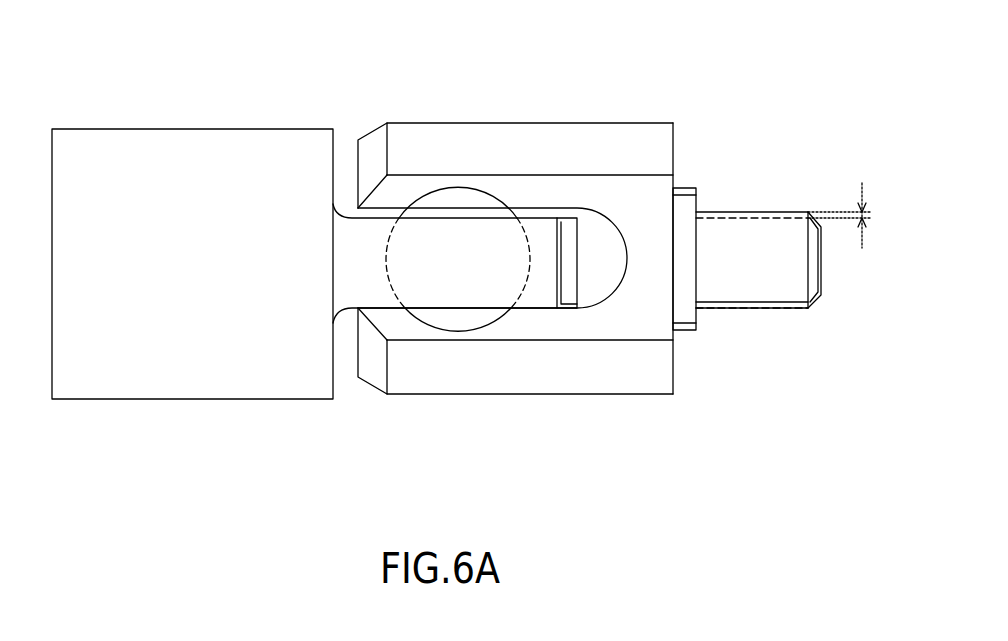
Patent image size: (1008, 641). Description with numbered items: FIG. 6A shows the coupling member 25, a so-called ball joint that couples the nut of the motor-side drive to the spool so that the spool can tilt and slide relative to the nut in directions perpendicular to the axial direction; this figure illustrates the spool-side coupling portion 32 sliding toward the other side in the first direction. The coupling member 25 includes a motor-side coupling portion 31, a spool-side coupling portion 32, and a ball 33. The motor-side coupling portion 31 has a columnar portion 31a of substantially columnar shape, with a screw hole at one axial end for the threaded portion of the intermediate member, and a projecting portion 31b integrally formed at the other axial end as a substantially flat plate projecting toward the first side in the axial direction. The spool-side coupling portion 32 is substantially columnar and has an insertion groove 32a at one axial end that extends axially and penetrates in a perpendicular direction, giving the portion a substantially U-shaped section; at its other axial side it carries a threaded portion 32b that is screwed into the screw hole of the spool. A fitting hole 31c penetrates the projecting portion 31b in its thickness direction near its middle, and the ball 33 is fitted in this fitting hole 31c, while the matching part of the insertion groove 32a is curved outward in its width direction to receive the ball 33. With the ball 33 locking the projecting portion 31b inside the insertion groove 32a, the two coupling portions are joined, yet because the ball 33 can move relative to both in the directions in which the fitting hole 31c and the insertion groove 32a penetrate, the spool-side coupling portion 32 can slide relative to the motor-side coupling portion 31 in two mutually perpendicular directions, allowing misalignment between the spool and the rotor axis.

The coupling member 25 is at (708, 122).
The motor-side coupling portion 31 is at (163, 422).
The columnar portion 31a is at (250, 385).
The projecting portion 31b is at (551, 258).
The fitting hole 31c is at (401, 315).
The spool-side coupling portion 32 is at (763, 200).
The insertion groove 32a is at (537, 213).
The threaded portion 32b is at (783, 212).
The ball 33 is at (463, 317).